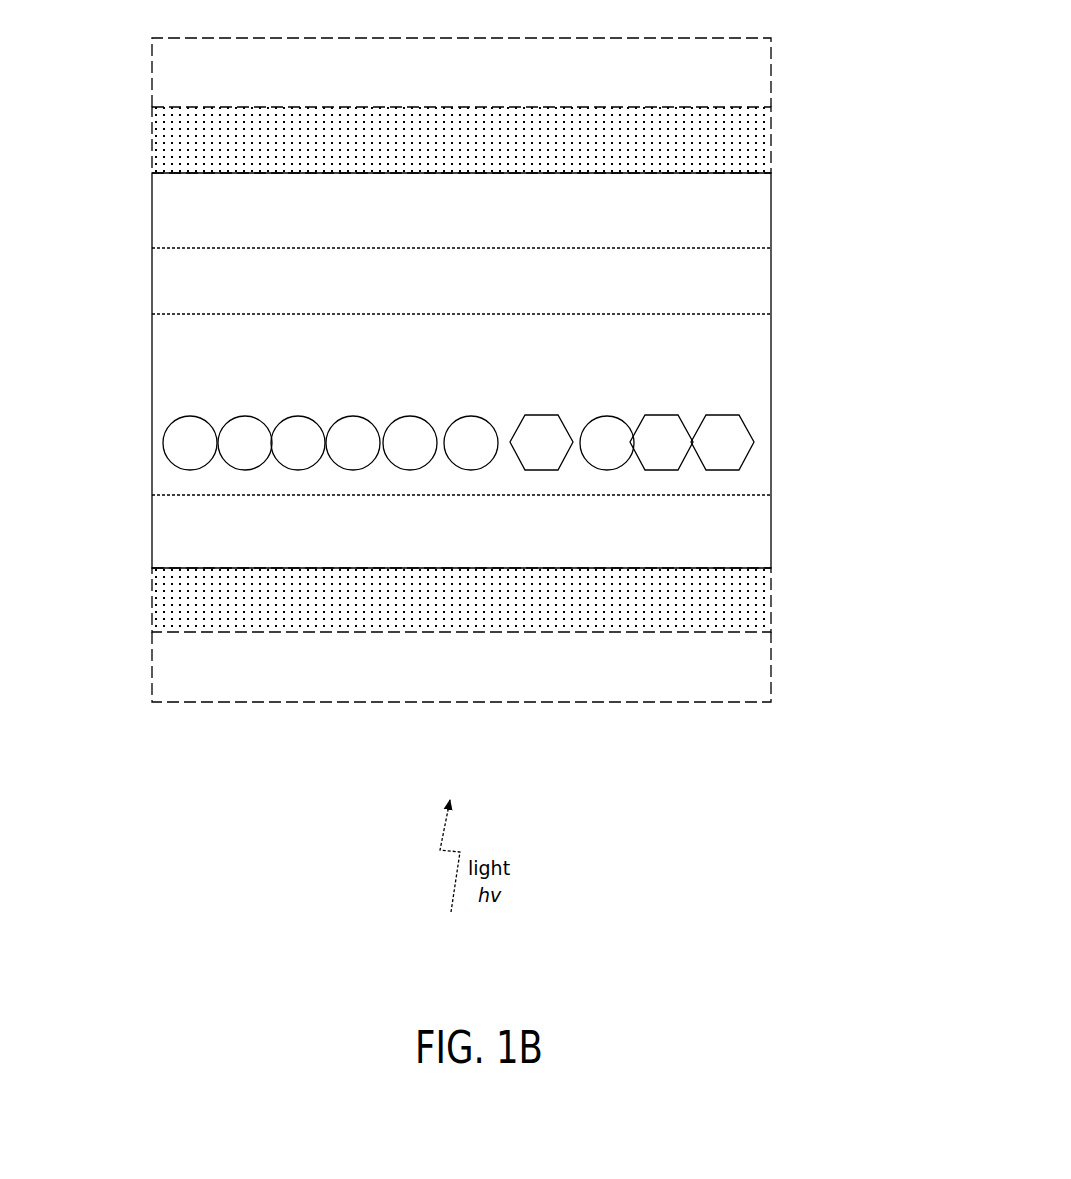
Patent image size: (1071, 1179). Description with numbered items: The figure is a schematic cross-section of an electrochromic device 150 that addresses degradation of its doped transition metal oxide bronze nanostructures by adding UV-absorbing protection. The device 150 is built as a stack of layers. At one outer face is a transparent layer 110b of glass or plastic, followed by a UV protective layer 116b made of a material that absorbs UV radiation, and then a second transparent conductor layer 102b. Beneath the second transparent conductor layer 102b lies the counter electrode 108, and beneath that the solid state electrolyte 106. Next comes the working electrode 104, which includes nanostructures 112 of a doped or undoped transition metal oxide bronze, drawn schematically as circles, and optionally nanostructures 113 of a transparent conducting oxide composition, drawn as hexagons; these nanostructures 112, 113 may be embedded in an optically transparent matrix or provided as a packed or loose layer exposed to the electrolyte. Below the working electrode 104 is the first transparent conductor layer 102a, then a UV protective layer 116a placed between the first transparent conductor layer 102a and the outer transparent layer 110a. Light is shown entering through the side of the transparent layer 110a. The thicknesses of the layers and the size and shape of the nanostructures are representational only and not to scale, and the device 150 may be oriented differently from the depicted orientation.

The transparent layer 110b is at (152, 70).
The UV protective layer 116b is at (152, 138).
The second transparent conductor layer 102b is at (152, 207).
The counter electrode 108 is at (152, 265).
The solid state electrolyte 106 is at (771, 353).
The working electrode 104 is at (472, 445).
The nanostructures 112 is at (223, 425).
The nanostructures 113 is at (737, 470).
The first transparent conductor layer 102a is at (152, 543).
The UV protective layer 116a is at (150, 600).
The transparent layer 110a is at (152, 678).
The electrochromic device 150 is at (832, 74).